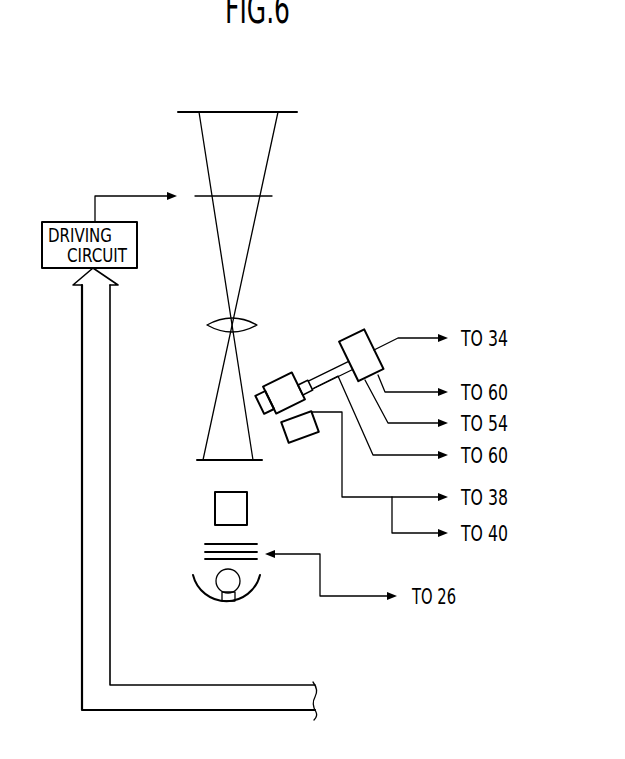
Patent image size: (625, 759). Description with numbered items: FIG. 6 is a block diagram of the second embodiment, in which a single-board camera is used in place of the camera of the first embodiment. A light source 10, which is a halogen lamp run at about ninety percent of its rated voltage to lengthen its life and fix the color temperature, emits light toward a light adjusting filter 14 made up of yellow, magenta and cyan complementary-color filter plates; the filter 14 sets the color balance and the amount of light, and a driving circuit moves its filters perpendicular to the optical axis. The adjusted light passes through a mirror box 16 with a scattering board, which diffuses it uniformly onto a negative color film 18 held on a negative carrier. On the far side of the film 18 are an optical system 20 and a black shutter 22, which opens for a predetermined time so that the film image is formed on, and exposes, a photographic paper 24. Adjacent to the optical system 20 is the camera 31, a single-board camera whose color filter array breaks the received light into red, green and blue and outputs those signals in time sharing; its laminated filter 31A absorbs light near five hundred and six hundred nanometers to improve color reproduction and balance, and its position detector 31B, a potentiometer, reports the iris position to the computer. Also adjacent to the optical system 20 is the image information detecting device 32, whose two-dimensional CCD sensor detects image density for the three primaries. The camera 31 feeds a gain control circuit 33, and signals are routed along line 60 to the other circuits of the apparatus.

The light source 10 is at (232, 580).
The light adjusting filter 14 is at (256, 534).
The mirror box 16 is at (215, 510).
The negative color film 18 is at (205, 463).
The optical system 20 is at (252, 323).
The black shutter 22 is at (272, 197).
The photographic paper 24 is at (290, 113).
The camera 31 is at (278, 377).
The filter 31A is at (254, 390).
The position detector 31B is at (311, 375).
The image information detecting device 32 is at (301, 439).
The gain control circuit 33 is at (358, 332).
The signal bus to driving circuit 60 is at (245, 692).